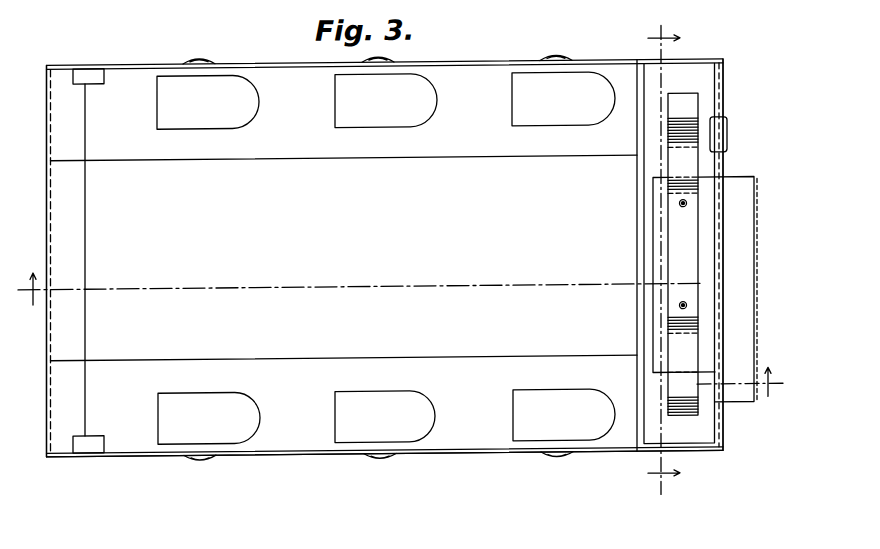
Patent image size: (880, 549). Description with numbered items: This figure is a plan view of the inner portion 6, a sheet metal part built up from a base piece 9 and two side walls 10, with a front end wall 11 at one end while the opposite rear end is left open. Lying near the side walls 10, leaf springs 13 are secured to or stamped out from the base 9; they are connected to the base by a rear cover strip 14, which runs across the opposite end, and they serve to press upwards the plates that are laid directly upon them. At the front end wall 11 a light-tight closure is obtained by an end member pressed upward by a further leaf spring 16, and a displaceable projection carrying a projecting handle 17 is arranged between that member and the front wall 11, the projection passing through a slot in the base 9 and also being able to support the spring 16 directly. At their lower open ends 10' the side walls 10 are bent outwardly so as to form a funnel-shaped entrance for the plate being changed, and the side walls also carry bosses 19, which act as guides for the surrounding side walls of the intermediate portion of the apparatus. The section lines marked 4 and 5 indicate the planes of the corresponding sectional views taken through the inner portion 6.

The section line 4- 4 is at (399, 348).
The section line 5- 5 is at (664, 257).
The inner portion 6 is at (586, 457).
The base piece 9 is at (344, 258).
The side walls 10 is at (385, 268).
The lower open ends 10' is at (79, 269).
The front end wall 11 is at (718, 155).
The leaf springs 13 is at (520, 107).
The rear cover strip 14 is at (78, 258).
The leaf spring 16 is at (698, 96).
The projecting handle 17 is at (741, 249).
The bosses 19 is at (205, 58).